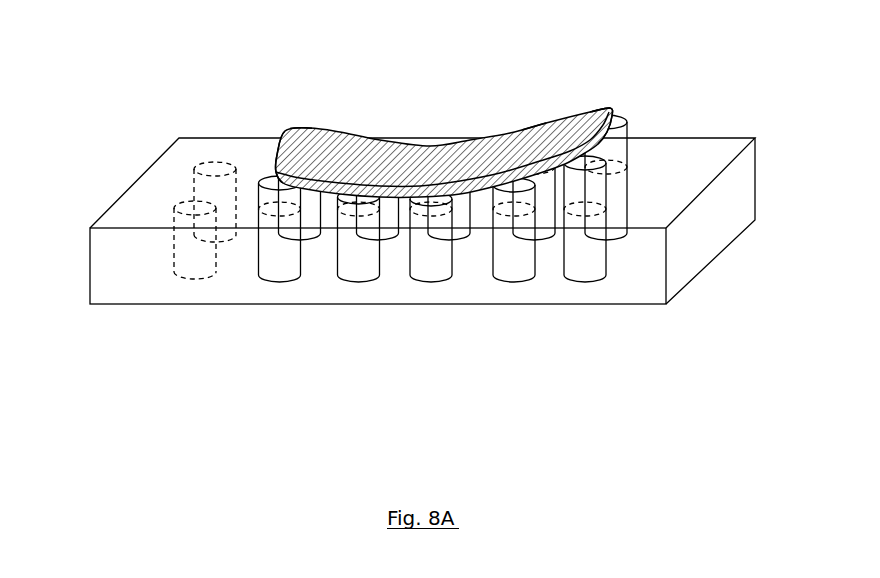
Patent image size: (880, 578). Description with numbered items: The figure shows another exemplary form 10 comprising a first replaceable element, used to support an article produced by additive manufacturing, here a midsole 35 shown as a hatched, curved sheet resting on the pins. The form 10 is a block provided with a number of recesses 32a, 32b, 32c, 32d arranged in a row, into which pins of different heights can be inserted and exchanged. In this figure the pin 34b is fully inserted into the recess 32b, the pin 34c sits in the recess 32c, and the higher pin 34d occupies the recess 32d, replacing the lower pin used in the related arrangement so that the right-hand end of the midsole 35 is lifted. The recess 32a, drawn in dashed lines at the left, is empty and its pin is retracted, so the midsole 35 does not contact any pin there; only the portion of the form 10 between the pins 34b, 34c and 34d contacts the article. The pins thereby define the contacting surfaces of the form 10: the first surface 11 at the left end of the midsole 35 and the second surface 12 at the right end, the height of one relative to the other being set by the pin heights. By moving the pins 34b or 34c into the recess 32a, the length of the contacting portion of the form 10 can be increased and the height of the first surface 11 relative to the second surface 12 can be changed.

The form 10 is at (87, 80).
The first surface 11 is at (286, 134).
The second surface 12 is at (613, 113).
The recess 32a is at (225, 233).
The recess 32b is at (307, 235).
The recess 32c is at (545, 233).
The recess 32d is at (614, 237).
The pin 34b is at (301, 128).
The pin 34c is at (534, 125).
The higher pin 34d is at (602, 108).
The midsole 35 is at (470, 141).